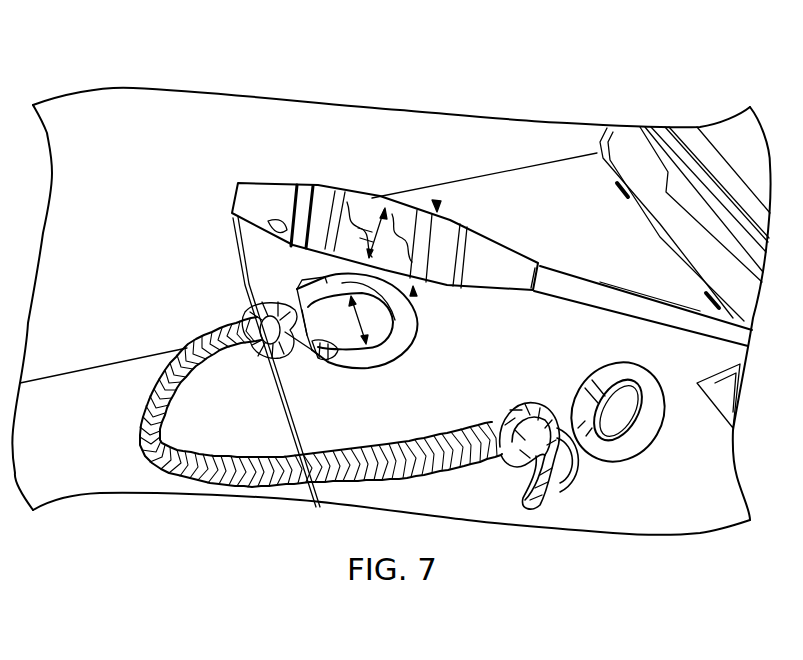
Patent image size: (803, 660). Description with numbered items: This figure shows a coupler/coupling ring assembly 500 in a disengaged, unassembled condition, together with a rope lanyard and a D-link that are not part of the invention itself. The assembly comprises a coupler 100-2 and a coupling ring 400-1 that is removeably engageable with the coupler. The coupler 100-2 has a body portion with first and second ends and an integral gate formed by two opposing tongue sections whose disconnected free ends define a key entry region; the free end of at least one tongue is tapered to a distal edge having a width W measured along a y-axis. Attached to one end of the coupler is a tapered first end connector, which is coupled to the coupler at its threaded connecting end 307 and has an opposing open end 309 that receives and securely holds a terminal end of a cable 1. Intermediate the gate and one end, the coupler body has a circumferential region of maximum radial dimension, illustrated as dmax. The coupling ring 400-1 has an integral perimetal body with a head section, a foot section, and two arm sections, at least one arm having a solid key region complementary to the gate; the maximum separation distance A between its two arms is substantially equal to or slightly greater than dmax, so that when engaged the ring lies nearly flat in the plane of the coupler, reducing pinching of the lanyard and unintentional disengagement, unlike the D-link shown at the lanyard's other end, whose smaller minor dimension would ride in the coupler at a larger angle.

The coupler/coupling ring assembly 500 is at (203, 62).
The coupler 100-2 is at (312, 172).
The connecting end of the first end connector 307 is at (537, 262).
The open end of the first end connector 309 is at (542, 267).
The cable 1 is at (575, 293).
The coupling ring 400-1 is at (357, 325).
The width of the distal edge W is at (380, 228).
The maximum diametrical dimension of the body portion dmax is at (437, 205).
The maximum separation distance between the two arms A is at (358, 320).